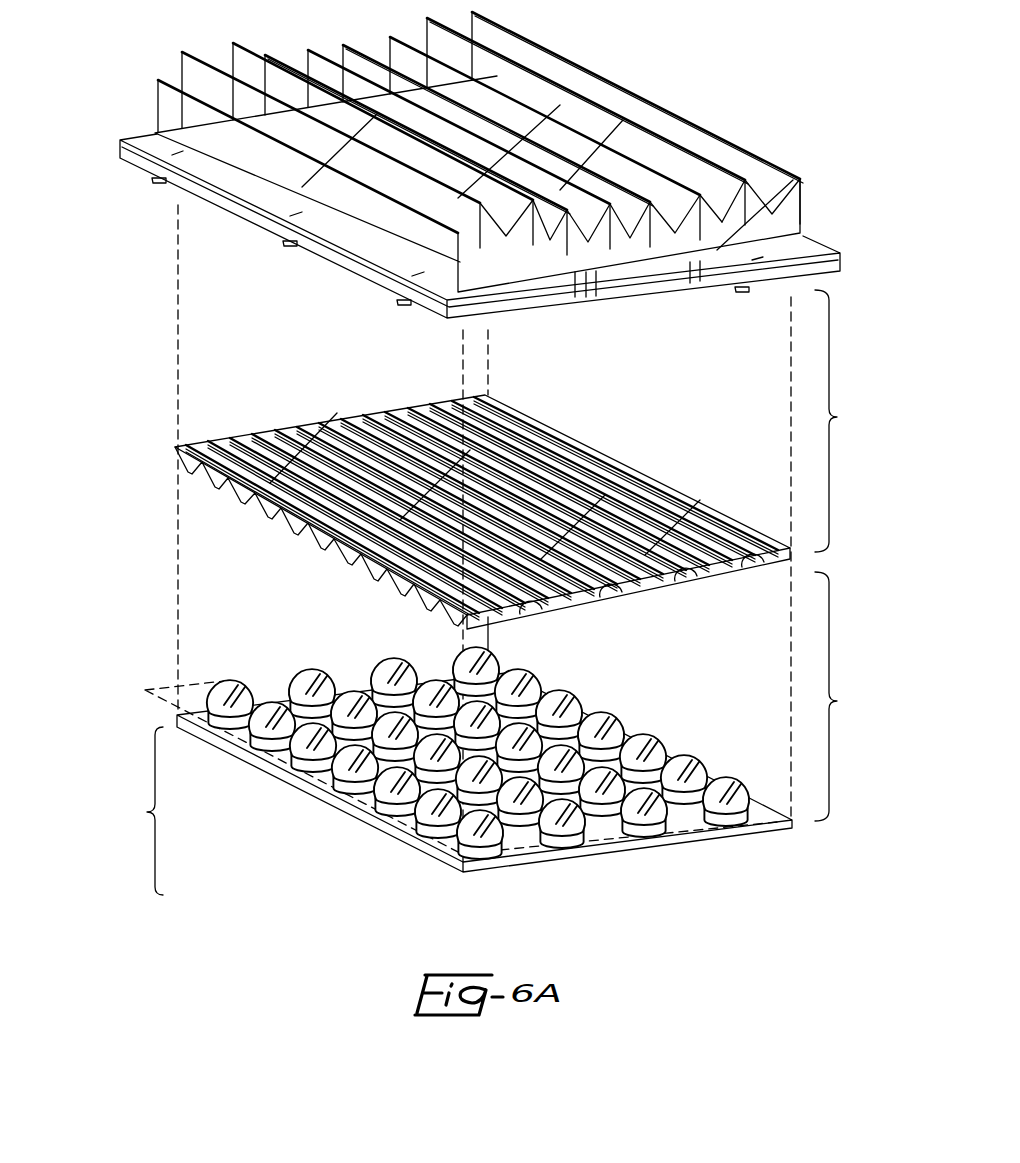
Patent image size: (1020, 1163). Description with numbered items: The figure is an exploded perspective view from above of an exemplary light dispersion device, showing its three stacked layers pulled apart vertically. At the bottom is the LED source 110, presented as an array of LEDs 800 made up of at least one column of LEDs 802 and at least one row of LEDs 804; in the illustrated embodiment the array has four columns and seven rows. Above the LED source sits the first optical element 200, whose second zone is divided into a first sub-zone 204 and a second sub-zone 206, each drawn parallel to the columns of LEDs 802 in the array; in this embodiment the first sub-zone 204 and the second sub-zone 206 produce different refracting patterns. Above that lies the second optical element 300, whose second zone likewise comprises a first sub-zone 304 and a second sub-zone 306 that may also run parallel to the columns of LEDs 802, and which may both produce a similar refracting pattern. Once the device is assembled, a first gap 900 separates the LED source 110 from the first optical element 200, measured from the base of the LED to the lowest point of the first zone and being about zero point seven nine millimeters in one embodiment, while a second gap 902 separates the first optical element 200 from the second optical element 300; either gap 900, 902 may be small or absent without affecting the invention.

The LED source 110 is at (135, 811).
The first optical element 200 is at (156, 447).
The first sub-zone 204 is at (477, 374).
The second sub-zone 206 is at (398, 380).
The second optical element 300 is at (143, 113).
The first sub-zone 304 is at (628, 157).
The second sub-zone 306 is at (606, 137).
The array of LEDs 800 is at (308, 807).
The column of LEDs 802 is at (167, 682).
The row of LEDs 804 is at (690, 833).
The first gap 900 is at (849, 696).
The second gap 902 is at (849, 421).